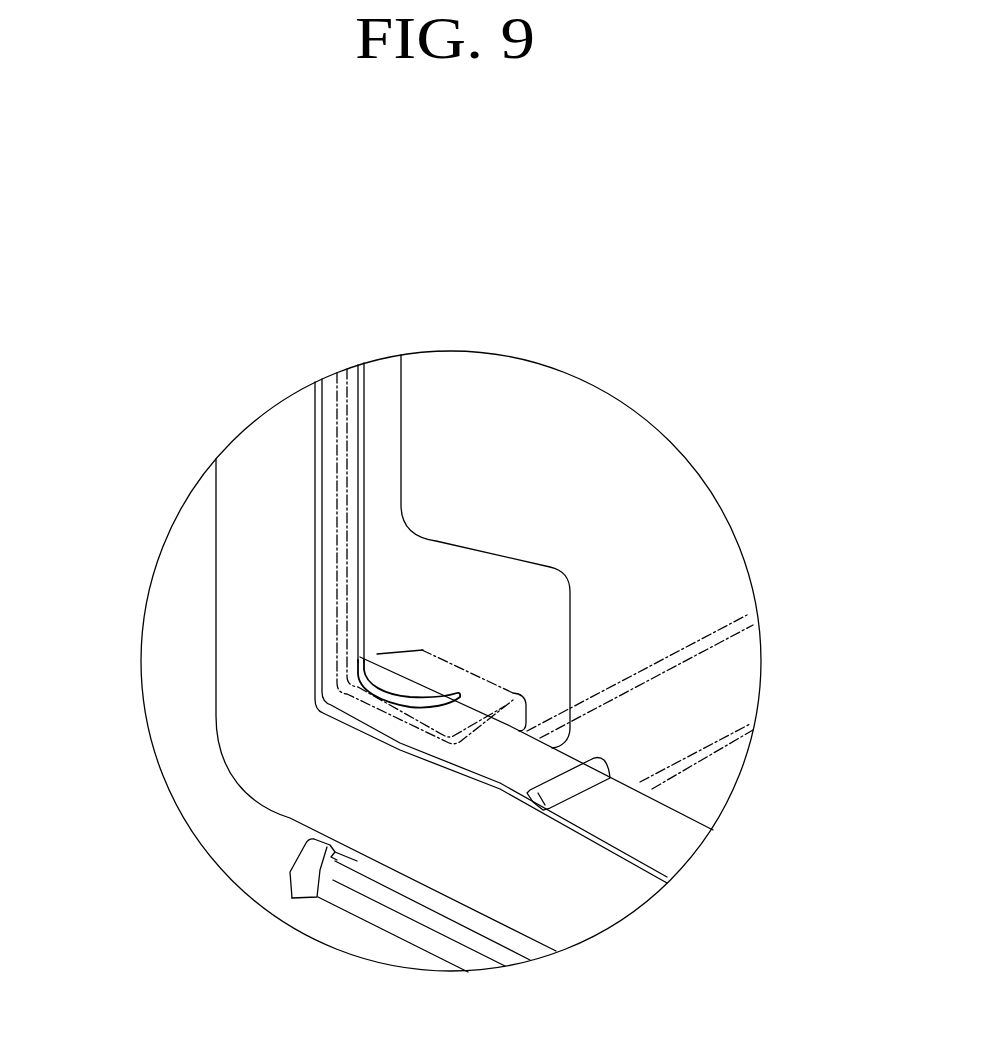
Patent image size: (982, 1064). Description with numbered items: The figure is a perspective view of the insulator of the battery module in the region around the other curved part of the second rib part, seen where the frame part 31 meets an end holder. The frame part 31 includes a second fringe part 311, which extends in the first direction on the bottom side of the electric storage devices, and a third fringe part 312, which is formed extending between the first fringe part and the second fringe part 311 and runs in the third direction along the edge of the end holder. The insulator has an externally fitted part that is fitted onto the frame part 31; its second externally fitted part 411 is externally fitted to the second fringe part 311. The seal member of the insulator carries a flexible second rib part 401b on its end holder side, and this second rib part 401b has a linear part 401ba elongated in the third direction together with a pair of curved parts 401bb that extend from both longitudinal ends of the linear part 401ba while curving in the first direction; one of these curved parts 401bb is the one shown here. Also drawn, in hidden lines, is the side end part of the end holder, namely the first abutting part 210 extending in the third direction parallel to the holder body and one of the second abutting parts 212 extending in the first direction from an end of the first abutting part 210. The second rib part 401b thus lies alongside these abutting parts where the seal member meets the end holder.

The frame part 31 is at (210, 757).
The second fringe part 311 is at (403, 810).
The third fringe part 312 is at (266, 587).
The first abutting part 210 is at (338, 465).
The second abutting part 212 is at (490, 725).
The second rib part 401b is at (369, 457).
The linear part 401ba is at (360, 537).
The curved part 401bb is at (421, 700).
The second externally fitted part 411 is at (647, 833).